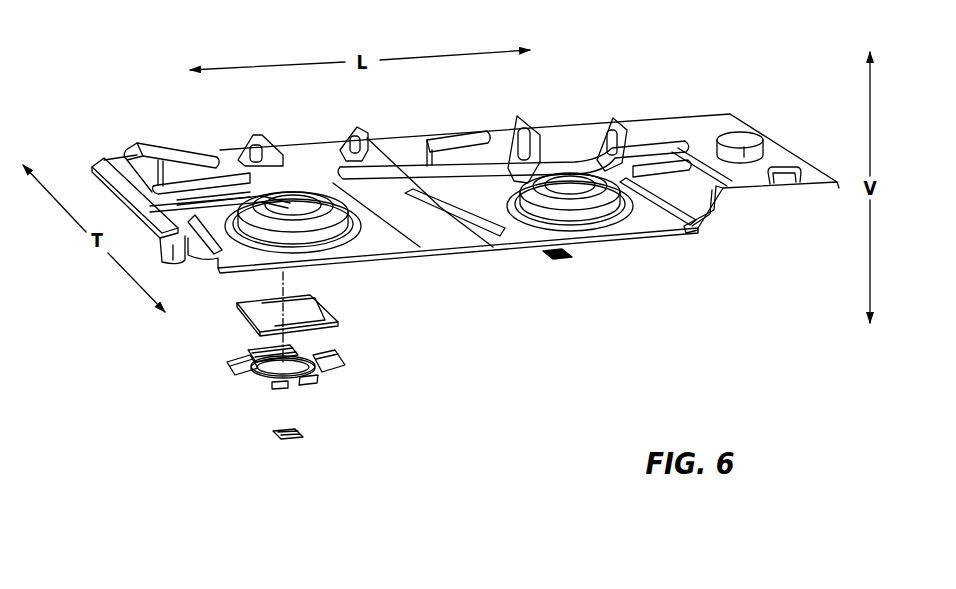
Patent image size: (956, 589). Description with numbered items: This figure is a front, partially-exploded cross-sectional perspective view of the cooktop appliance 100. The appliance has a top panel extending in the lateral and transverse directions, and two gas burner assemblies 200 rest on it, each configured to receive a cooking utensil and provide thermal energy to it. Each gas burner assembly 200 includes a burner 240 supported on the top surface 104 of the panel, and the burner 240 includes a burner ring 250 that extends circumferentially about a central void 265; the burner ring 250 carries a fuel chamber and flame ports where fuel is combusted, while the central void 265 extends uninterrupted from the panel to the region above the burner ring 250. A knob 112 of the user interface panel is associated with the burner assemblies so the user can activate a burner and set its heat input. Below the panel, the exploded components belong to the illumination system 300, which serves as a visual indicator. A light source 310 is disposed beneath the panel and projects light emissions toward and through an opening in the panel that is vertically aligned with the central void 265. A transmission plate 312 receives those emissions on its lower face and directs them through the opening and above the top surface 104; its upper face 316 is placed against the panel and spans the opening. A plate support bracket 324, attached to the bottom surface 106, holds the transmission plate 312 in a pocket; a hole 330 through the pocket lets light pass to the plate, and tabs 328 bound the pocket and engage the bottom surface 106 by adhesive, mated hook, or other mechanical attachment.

The cooktop appliance 100 is at (593, 53).
The top surface 104 is at (450, 241).
The bottom surface 106 is at (405, 265).
The knobs 112 is at (733, 147).
The gas burner assembly 200 is at (140, 160).
The burner 240 is at (378, 245).
The burner ring 250 is at (567, 172).
The central void 265 is at (307, 163).
The illumination system 300 is at (282, 455).
The light source 310 is at (574, 258).
The transmission plate 312 is at (243, 305).
The upper face 316 is at (311, 312).
The plate support bracket 324 is at (325, 375).
The tabs 328 is at (336, 360).
The hole 330 is at (262, 352).